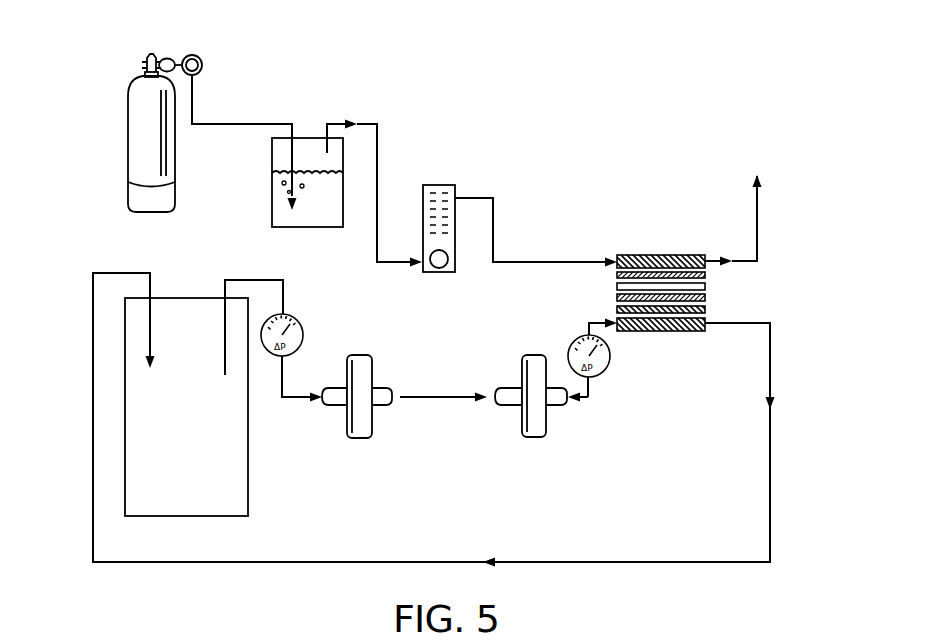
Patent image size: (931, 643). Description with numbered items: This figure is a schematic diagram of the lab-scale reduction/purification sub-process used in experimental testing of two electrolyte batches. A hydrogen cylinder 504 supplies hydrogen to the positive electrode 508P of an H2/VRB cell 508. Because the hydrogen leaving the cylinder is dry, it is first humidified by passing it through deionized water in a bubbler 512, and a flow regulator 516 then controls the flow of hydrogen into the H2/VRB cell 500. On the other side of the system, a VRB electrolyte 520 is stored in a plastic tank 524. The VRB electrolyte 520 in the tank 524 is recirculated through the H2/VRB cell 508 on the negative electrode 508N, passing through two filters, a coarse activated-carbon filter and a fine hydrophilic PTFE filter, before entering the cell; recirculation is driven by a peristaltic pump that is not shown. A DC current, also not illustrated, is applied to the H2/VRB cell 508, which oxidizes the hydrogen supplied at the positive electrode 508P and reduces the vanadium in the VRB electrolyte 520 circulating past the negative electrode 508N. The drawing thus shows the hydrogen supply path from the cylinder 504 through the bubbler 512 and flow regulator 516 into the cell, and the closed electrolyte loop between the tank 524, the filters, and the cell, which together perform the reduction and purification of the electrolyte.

The H2/VRB cell 500 is at (780, 210).
The hydrogen cylinder 504 is at (128, 143).
The H2/VRB cell 508 is at (663, 239).
The positive electrode 508P is at (617, 286).
The negative electrode 508N is at (725, 302).
The bubbler 512 is at (307, 137).
The flow regulator 516 is at (455, 232).
The VRB electrolyte 520 is at (207, 409).
The plastic tank 524 is at (229, 416).